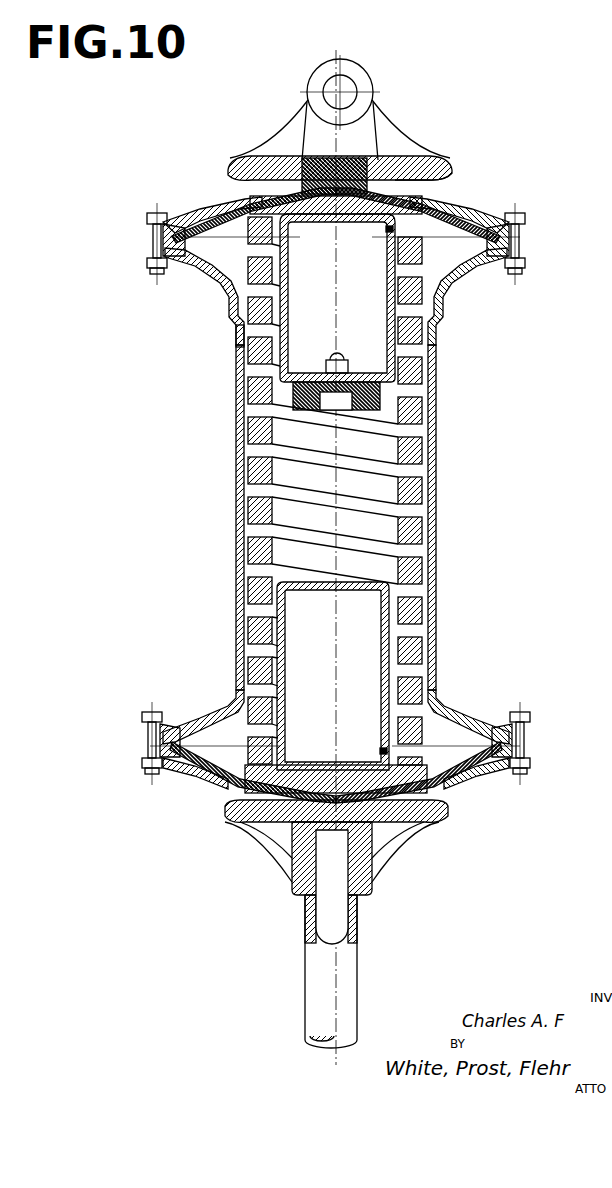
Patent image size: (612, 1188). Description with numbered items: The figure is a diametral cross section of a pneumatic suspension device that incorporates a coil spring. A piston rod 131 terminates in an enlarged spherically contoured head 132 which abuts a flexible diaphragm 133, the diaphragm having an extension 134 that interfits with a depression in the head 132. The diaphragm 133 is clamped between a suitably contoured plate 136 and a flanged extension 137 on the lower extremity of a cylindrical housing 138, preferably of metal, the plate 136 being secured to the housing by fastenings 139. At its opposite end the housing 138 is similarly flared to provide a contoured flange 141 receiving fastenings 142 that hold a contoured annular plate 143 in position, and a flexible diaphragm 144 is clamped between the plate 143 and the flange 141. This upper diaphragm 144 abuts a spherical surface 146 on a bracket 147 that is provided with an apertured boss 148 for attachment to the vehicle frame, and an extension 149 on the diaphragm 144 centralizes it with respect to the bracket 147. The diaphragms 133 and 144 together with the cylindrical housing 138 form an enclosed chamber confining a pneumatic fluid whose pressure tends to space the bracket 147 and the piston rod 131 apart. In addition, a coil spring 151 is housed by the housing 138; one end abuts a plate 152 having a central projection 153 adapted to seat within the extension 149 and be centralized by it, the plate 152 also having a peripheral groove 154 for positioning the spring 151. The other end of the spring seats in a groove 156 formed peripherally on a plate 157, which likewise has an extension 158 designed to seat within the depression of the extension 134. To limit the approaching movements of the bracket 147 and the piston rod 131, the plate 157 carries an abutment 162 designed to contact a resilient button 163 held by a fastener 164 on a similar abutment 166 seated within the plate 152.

The piston rod 131 is at (307, 968).
The spherically contoured head 132 is at (425, 808).
The flexible diaphragm 133 is at (230, 790).
The extension 134 is at (290, 850).
The contoured plate 136 is at (183, 768).
The flanged extension 137 is at (212, 698).
The cylindrical housing 138 is at (236, 490).
The fastenings 139 is at (142, 746).
The flange 141 is at (203, 262).
The fastenings 142 is at (146, 237).
The annular plate 143 is at (205, 206).
The flexible diaphragm 144 is at (442, 207).
The spherical surface 146 is at (420, 178).
The bracket 147 is at (382, 142).
The apertured boss 148 is at (360, 82).
The extension 149 is at (285, 145).
The coil spring 151 is at (412, 532).
The plate 152 is at (262, 201).
The central projection 153 is at (402, 160).
The peripheral groove 154 is at (386, 229).
The groove 156 is at (383, 752).
The plate 157 is at (410, 783).
The extension 158 is at (275, 826).
The abutment 162 is at (392, 614).
The resilient button 163 is at (398, 408).
The fastener 164 is at (342, 358).
The abutment 166 is at (240, 330).